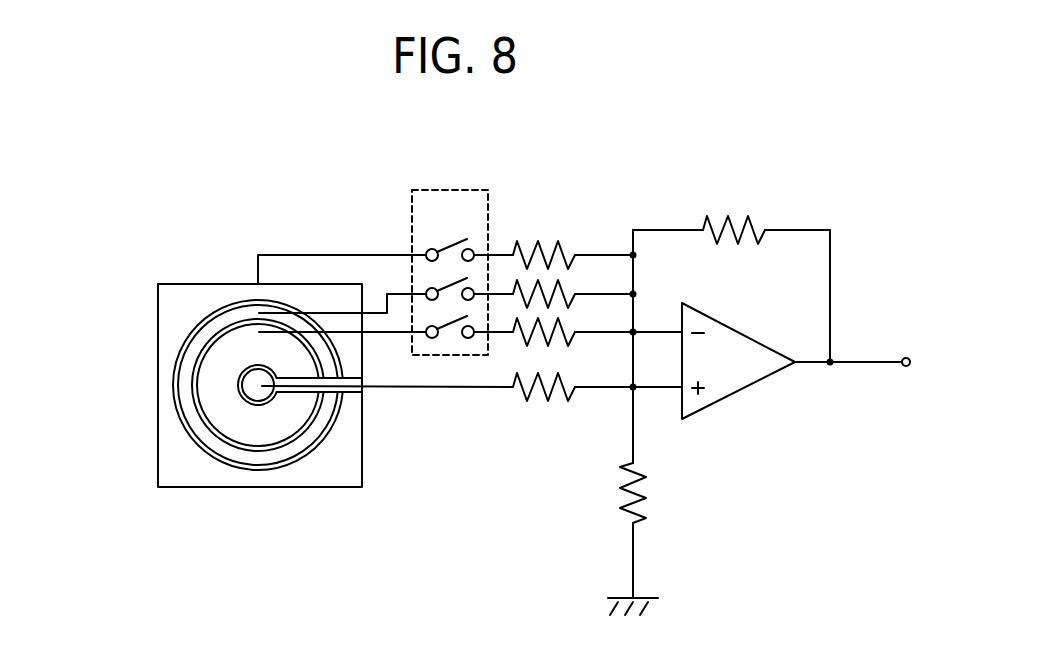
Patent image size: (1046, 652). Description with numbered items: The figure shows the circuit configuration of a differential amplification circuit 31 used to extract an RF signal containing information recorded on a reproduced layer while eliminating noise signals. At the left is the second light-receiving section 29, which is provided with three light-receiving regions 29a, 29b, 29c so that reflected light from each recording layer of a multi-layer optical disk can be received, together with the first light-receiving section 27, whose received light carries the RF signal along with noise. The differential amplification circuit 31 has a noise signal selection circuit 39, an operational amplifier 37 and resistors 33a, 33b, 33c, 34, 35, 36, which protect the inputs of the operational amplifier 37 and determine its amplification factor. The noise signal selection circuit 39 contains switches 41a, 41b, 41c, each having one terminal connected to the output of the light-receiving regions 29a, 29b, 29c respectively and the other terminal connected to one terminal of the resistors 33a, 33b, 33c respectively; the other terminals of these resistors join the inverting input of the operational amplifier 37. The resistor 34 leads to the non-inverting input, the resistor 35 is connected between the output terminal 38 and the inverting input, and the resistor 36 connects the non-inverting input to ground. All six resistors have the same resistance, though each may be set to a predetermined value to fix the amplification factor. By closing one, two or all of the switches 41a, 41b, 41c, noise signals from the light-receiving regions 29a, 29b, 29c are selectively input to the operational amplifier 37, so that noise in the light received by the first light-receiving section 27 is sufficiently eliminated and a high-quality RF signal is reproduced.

The first light-receiving section 27 is at (256, 392).
The second light-receiving section 29 is at (88, 323).
The light-receiving region 29a is at (215, 362).
The light-receiving region 29b is at (187, 390).
The light-receiving region 29c is at (178, 438).
The differential amplification circuit 31 is at (846, 142).
The resistor 33a is at (517, 340).
The resistor 33b is at (568, 293).
The resistor 33c is at (516, 250).
The resistor 34 is at (565, 393).
The resistor 35 is at (723, 220).
The resistor 36 is at (640, 520).
The operational amplifier 37 is at (746, 392).
The output terminal 38 is at (905, 357).
The noise signal selection circuit 39 is at (447, 188).
The switch 41a is at (448, 340).
The switch 41b is at (438, 285).
The switch 41c is at (447, 244).